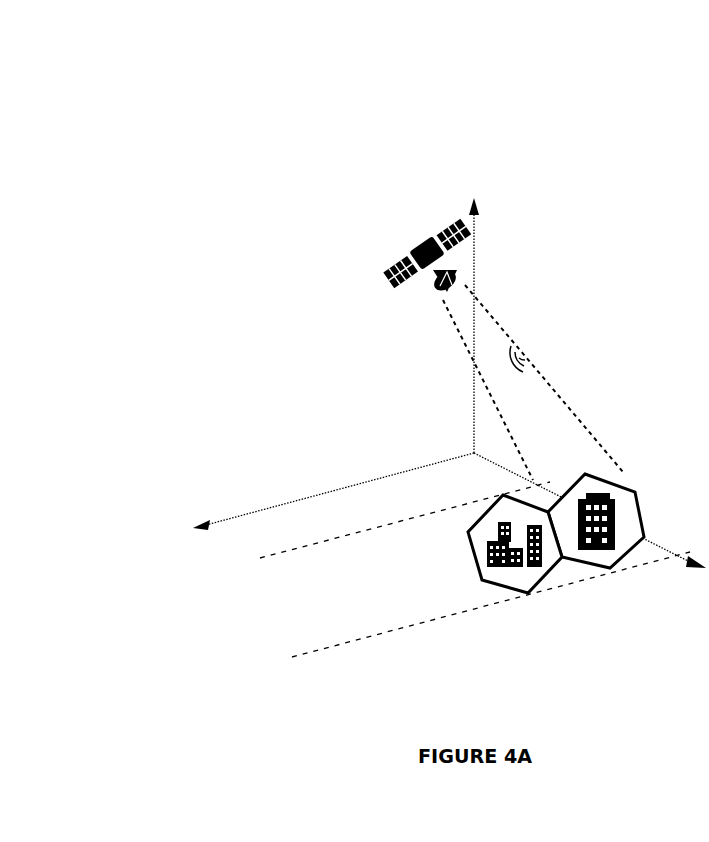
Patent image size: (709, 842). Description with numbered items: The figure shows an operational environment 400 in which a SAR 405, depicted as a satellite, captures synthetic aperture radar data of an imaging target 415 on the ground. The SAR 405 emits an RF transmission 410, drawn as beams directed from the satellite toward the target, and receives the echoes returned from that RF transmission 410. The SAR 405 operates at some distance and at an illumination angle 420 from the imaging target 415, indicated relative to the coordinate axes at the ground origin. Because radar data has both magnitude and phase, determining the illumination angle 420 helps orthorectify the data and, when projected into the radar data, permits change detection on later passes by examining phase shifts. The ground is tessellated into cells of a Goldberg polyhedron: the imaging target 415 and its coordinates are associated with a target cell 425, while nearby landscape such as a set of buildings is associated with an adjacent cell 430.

The operational environment 400 is at (160, 98).
The SAR 405 is at (407, 230).
The RF transmission 410 is at (528, 342).
The imaging target 415 is at (618, 508).
The illumination angle 420 is at (489, 447).
The target cell 425 is at (627, 553).
The adjacent cell 430 is at (468, 550).